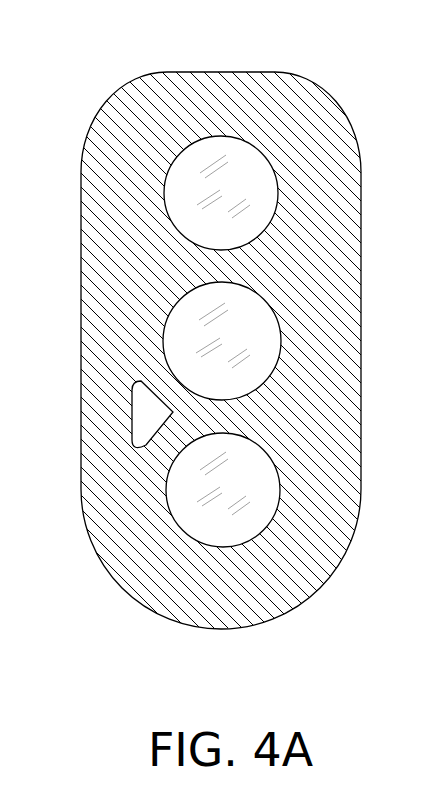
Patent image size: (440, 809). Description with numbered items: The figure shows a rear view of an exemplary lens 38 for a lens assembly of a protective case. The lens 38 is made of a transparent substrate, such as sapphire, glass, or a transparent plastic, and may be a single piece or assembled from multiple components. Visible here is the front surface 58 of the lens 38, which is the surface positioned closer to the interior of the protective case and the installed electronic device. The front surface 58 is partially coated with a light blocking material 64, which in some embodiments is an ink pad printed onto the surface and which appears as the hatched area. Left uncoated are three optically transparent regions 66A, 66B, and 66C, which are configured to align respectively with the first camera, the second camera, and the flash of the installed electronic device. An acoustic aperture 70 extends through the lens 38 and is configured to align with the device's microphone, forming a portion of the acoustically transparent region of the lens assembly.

The lens 38 is at (221, 315).
The front surface 58 is at (152, 93).
The light blocking material 64 is at (125, 152).
The optically transparent region 66A is at (248, 208).
The optically transparent region 66B is at (253, 498).
The optically transparent region 66C is at (253, 358).
The acoustic aperture 70 is at (145, 414).